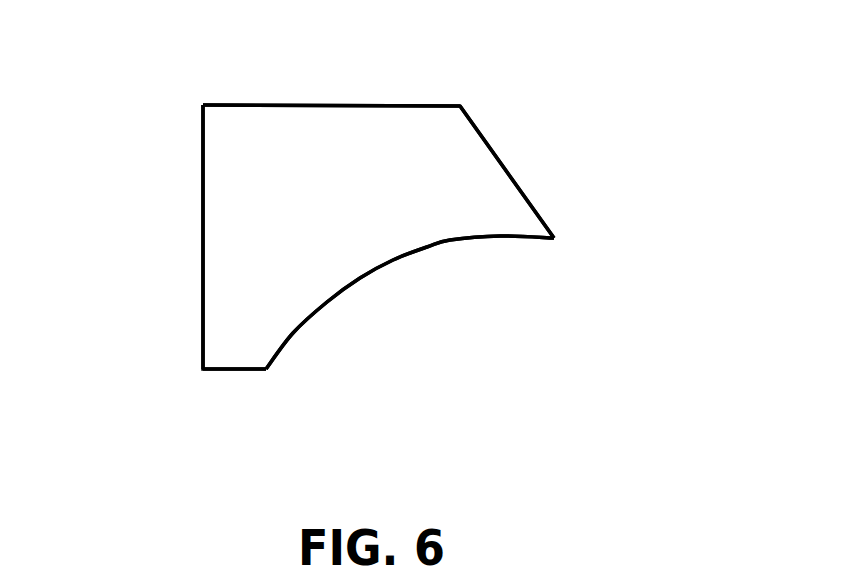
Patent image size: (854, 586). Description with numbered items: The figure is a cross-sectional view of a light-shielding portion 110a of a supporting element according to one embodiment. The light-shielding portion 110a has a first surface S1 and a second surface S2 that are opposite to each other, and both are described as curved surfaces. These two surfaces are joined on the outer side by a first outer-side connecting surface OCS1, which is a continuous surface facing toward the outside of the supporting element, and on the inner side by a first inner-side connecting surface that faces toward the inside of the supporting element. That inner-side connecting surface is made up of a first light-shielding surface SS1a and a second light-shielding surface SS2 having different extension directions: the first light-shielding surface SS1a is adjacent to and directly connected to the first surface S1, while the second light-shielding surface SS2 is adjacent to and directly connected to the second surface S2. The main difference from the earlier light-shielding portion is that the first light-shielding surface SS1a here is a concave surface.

The light-shielding portion 110a is at (675, 452).
The second surface S2 is at (332, 105).
The second light-shielding surface SS2 is at (508, 168).
The first light-shielding surface SS1a is at (427, 252).
The first outer-side connecting surface OCS1 is at (203, 203).
The first surface S1 is at (233, 370).